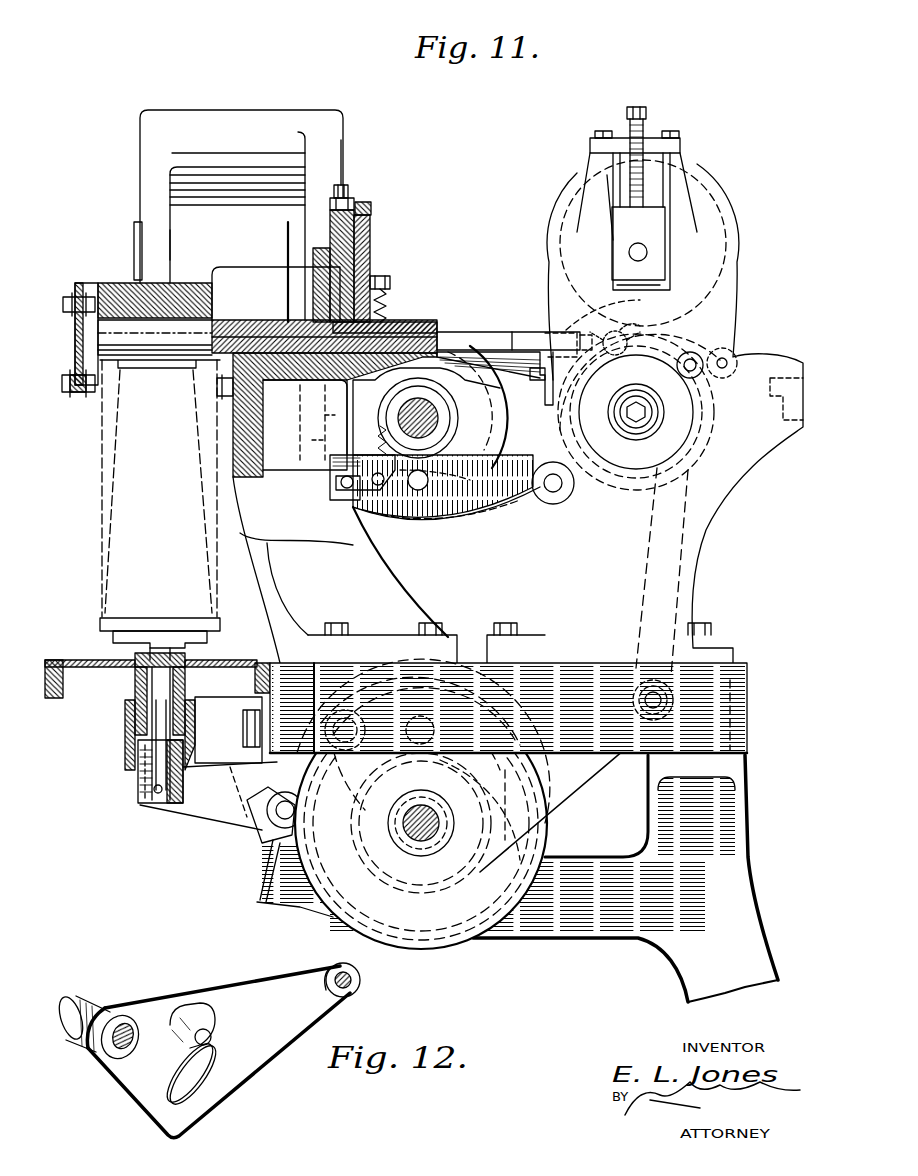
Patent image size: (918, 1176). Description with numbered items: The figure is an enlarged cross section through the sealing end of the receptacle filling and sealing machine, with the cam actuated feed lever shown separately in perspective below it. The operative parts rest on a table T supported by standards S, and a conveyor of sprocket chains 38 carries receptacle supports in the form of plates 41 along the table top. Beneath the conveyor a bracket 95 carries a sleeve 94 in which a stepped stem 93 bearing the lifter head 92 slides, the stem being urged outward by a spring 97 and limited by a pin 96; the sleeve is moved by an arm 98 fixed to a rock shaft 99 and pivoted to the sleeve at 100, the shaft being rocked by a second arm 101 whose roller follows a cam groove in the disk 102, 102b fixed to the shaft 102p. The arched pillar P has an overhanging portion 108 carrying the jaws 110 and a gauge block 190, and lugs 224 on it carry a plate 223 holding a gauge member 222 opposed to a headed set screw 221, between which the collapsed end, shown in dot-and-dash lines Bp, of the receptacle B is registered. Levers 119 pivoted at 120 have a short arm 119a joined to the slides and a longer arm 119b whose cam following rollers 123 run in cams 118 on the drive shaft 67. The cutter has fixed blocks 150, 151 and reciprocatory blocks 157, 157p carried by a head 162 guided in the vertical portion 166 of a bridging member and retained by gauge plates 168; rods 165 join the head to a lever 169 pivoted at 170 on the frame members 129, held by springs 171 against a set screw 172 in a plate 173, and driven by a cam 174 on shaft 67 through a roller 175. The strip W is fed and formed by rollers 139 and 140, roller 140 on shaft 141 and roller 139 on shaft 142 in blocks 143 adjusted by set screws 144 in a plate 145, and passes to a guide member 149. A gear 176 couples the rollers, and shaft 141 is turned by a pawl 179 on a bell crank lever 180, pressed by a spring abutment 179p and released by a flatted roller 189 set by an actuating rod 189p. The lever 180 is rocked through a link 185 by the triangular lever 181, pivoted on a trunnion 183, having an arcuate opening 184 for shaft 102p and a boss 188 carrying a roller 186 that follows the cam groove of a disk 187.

In FIG. 11, the levers 119 is at (338, 122).
In FIG. 11, the lever arm 119a is at (171, 242).
In FIG. 11, the lever arm 119b is at (310, 217).
In FIG. 11, the pivotal support 120 is at (134, 236).
In FIG. 11, the cutter block 157p is at (252, 322).
In FIG. 11, the cutter block 157 is at (310, 384).
In FIG. 11, the cutter block 151 is at (400, 333).
In FIG. 11, the cam following rollers 123 is at (318, 424).
In FIG. 11, the overhanging portion 108 is at (112, 284).
In FIG. 11, the lugs 224 is at (82, 284).
In FIG. 11, the gauge block 190 is at (98, 323).
In FIG. 11, the jaws 110 is at (98, 346).
In FIG. 11, the plate 223 is at (65, 383).
In FIG. 11, the gauge member 222 is at (92, 396).
In FIG. 11, the headed set screw 221 is at (216, 388).
In FIG. 11, the bag B is at (113, 476).
In FIG. 11, the collapsed receptacle end Bp is at (100, 448).
In FIG. 11, the head 92 is at (100, 627).
In FIG. 11, the pin 96 is at (126, 656).
In FIG. 11, the head 162 is at (360, 220).
In FIG. 11, the vertical portion 166 is at (370, 243).
In FIG. 11, the plate 173 is at (350, 208).
In FIG. 11, the set screw 172 is at (349, 188).
In FIG. 11, the springs 171 is at (388, 300).
In FIG. 11, the cutter block 150 is at (466, 345).
In FIG. 11, the work W is at (490, 307).
In FIG. 11, the guide member 149 is at (518, 345).
In FIG. 11, the cams 118 is at (503, 422).
In FIG. 11, the cam 174 is at (440, 386).
In FIG. 11, the drive shaft 67 is at (435, 416).
In FIG. 11, the lever 169 is at (465, 510).
In FIG. 11, the roller 175 is at (428, 522).
In FIG. 11, the rods 165 is at (330, 470).
In FIG. 11, the gauge plates 168 is at (334, 484).
In FIG. 11, the arched pillar P is at (472, 570).
In FIG. 11, the feed roller 139 is at (712, 226).
In FIG. 11, the set screws 144 is at (644, 112).
In FIG. 11, the plate 145 is at (650, 140).
In FIG. 11, the blocks 143 is at (638, 246).
In FIG. 11, the shaft 142 is at (647, 252).
In FIG. 11, the pawl 179 is at (588, 318).
In FIG. 11, the spring influenced abutment 179p is at (700, 342).
In FIG. 11, the roller 189 is at (652, 322).
In FIG. 11, the actuating rod 189p is at (641, 309).
In FIG. 11, the gear 176 is at (639, 412).
In FIG. 11, the shaft 141 is at (636, 425).
In FIG. 11, the bell crank lever 180 is at (704, 396).
In FIG. 11, the pivot 170 is at (553, 493).
In FIG. 11, the feed roller 140 is at (716, 462).
In FIG. 11, the frame members 129 is at (712, 515).
In FIG. 11, the link 185 is at (695, 588).
In FIG. 11, the table T is at (508, 741).
In FIG. 11, the trunnion 183 is at (345, 715).
In FIG. 12, the trunnion 183 is at (92, 1000).
In FIG. 11, the roller 186 is at (421, 715).
In FIG. 11, the standards S is at (517, 878).
In FIG. 11, the plates 41 is at (88, 670).
In FIG. 11, the sprocket chains 38 is at (52, 700).
In FIG. 11, the spring 97 is at (135, 695).
In FIG. 11, the plunger or stem 93 is at (128, 722).
In FIG. 11, the sleeve 94 is at (137, 784).
In FIG. 11, the pivotal connection 100 is at (157, 794).
In FIG. 11, the bracket 95 is at (223, 712).
In FIG. 11, the arm 98 is at (196, 810).
In FIG. 11, the rock shaft 99 is at (285, 835).
In FIG. 11, the second arm 101 is at (270, 805).
In FIG. 11, the disk 102 is at (432, 943).
In FIG. 11, the shaft 102p is at (416, 835).
In FIG. 11, the wheel rim 102b is at (462, 925).
In FIG. 11, the arcuate opening 184 is at (492, 810).
In FIG. 12, the arcuate opening 184 is at (205, 1096).
In FIG. 11, the disk 187 is at (505, 777).
In FIG. 11, the lever 181 is at (578, 790).
In FIG. 12, the lever 181 is at (248, 990).
In FIG. 12, the boss 188 is at (192, 1015).